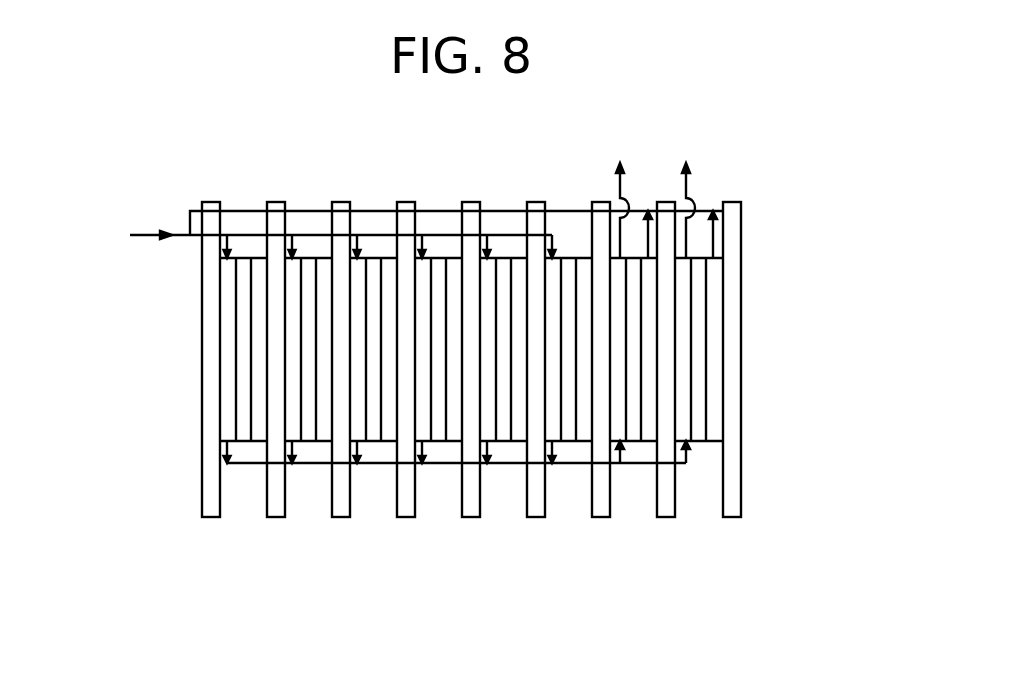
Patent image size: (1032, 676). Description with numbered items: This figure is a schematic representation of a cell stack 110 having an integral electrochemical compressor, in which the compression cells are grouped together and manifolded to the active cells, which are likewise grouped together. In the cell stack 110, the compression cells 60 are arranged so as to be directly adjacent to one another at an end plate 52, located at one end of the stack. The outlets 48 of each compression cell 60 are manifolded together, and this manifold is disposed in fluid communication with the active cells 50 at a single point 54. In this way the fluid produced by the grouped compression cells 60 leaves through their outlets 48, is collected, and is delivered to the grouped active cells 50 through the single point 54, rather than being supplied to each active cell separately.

The cell stack 110 is at (475, 376).
The end plate 52 is at (742, 312).
The active cells 50 is at (377, 509).
The compression cells 60 is at (702, 510).
The single point 54 is at (188, 231).
The outlets 48 is at (646, 240).